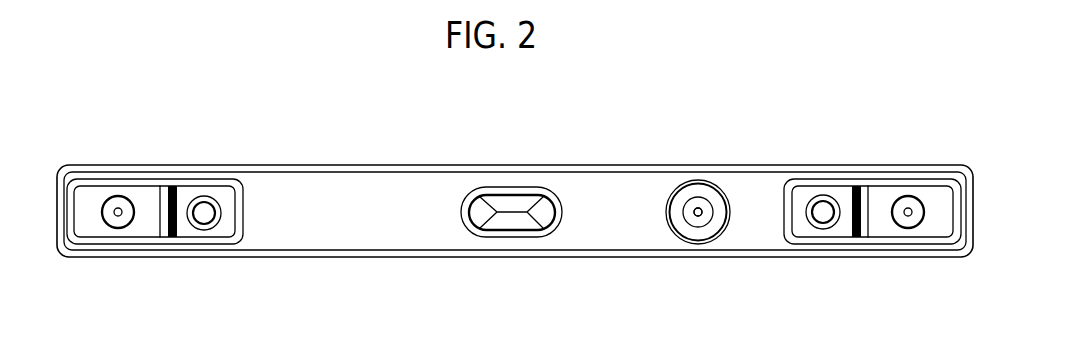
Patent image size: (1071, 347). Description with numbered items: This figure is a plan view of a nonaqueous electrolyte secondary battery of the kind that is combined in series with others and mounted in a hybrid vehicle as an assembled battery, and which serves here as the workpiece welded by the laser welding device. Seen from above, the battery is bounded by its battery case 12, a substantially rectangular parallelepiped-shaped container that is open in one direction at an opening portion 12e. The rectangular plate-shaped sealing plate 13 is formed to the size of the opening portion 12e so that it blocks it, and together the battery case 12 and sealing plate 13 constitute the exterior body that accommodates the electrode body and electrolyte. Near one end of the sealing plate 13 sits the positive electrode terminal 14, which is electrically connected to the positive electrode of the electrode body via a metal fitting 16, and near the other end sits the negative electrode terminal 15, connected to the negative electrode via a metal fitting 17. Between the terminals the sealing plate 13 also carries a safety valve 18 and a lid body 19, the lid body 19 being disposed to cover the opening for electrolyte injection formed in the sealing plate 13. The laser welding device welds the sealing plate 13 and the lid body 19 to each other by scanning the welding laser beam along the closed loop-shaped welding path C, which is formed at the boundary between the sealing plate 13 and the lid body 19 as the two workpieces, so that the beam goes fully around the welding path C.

The battery case 12 is at (285, 262).
The opening portion 12e is at (402, 238).
The sealing plate 13 is at (365, 188).
The positive electrode terminal 14 is at (204, 210).
The negative electrode terminal 15 is at (823, 210).
The metal fitting 16 is at (165, 190).
The metal fitting 17 is at (862, 190).
The safety valve 18 is at (537, 210).
The lid body 19 is at (698, 210).
The welding path C is at (700, 244).